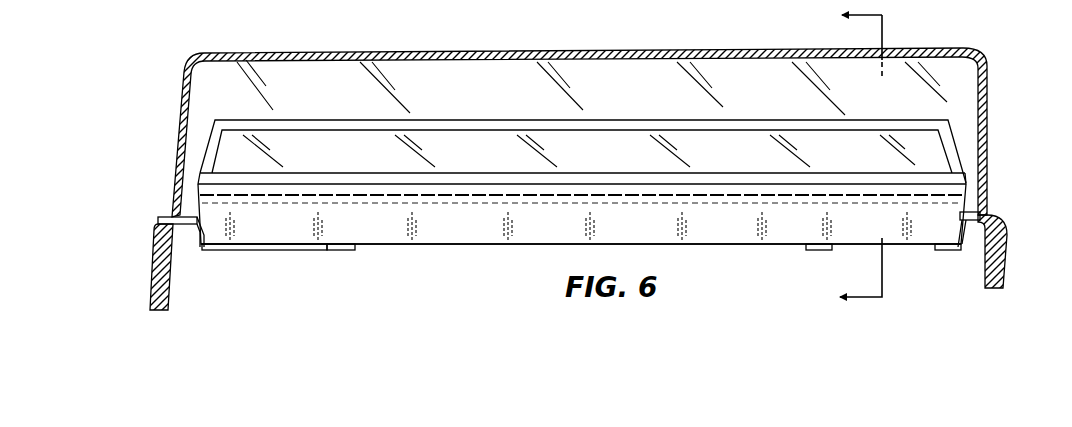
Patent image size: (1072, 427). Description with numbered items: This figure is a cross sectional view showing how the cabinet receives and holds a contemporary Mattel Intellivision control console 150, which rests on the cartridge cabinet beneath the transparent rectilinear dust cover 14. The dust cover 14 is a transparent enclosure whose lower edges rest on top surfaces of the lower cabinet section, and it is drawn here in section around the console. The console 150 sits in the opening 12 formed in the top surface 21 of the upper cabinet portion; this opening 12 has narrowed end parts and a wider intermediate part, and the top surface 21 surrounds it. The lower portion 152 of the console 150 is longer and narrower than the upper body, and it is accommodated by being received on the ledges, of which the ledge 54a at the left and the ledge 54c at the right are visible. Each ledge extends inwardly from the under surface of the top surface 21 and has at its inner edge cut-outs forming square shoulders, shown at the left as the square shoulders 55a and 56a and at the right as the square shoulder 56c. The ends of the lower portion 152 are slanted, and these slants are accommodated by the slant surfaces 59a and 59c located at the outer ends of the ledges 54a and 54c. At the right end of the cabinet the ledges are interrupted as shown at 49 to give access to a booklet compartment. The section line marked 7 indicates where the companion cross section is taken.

The transparent rectilinear dust cover 14 is at (628, 23).
The control console 150 is at (684, 116).
The opening 12 is at (210, 214).
The top surface 21 is at (192, 216).
The ledge 54a is at (335, 222).
The slant surface 59a is at (206, 236).
The square shoulder 55a is at (232, 251).
The square shoulder 56a is at (336, 252).
The lower portion of control console 152 is at (708, 234).
The ledge 54c is at (802, 258).
The square shoulder 56c is at (833, 249).
The interruption in ledges 49 is at (939, 249).
The slant surface 59c is at (976, 233).
The section line 7- 7 is at (873, 162).